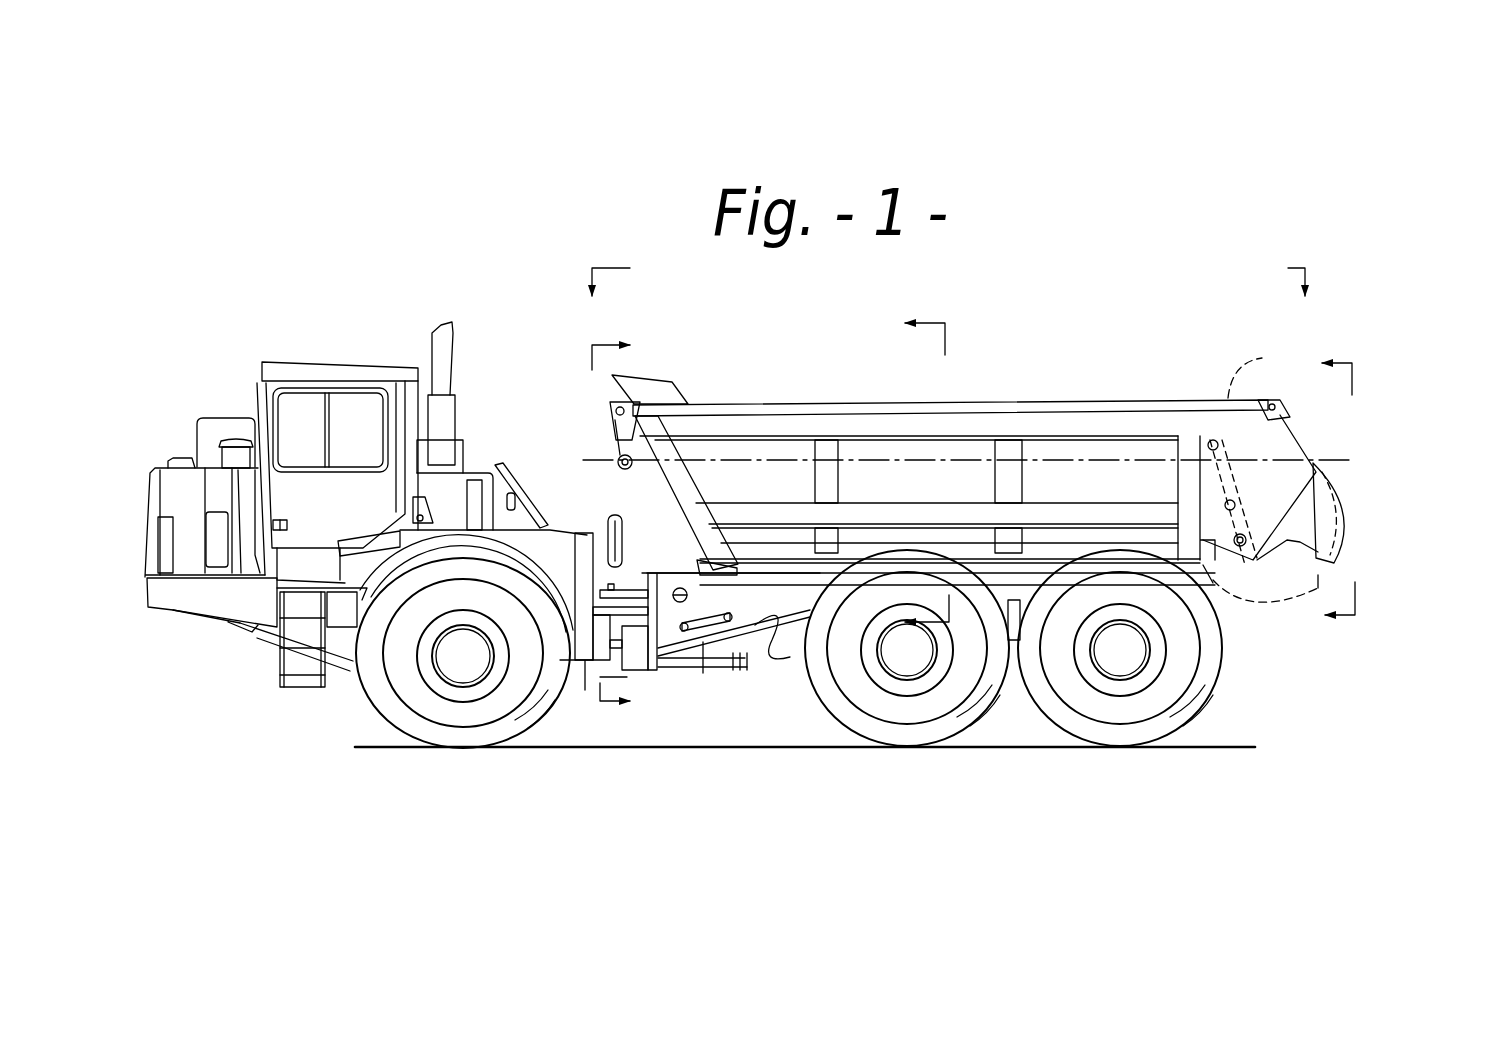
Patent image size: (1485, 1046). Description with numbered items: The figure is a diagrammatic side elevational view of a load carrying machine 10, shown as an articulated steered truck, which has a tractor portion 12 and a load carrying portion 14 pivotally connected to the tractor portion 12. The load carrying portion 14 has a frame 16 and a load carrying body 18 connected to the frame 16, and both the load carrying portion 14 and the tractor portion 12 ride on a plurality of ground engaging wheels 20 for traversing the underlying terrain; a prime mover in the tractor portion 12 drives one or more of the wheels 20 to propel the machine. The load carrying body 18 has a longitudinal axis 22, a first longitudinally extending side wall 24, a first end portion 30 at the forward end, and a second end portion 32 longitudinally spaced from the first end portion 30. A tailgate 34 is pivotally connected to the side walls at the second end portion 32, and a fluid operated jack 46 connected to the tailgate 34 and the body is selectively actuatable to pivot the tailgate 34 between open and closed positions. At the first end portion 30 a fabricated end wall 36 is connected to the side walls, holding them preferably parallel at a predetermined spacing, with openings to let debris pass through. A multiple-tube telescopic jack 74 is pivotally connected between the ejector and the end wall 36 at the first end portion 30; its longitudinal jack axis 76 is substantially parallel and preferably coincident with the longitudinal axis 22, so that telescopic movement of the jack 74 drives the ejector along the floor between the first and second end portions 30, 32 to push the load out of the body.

The load carrying machine 10 is at (292, 288).
The tractor portion 12 is at (232, 375).
The load carrying portion 14 is at (983, 282).
The frame 16 is at (782, 648).
The load carrying body 18 is at (1090, 415).
The ground engaging wheels 20 is at (462, 745).
The longitudinal axis 22 is at (1330, 455).
The first longitudinally extending side wall 24 is at (953, 458).
The first end portion 30 is at (727, 537).
The second end portion 32 is at (1281, 452).
The tailgate 34 is at (1343, 533).
The end wall 36 is at (667, 500).
The fluid operated jack 46 is at (1255, 362).
The jack 74 is at (616, 459).
The longitudinal jack axis 76 is at (1260, 583).